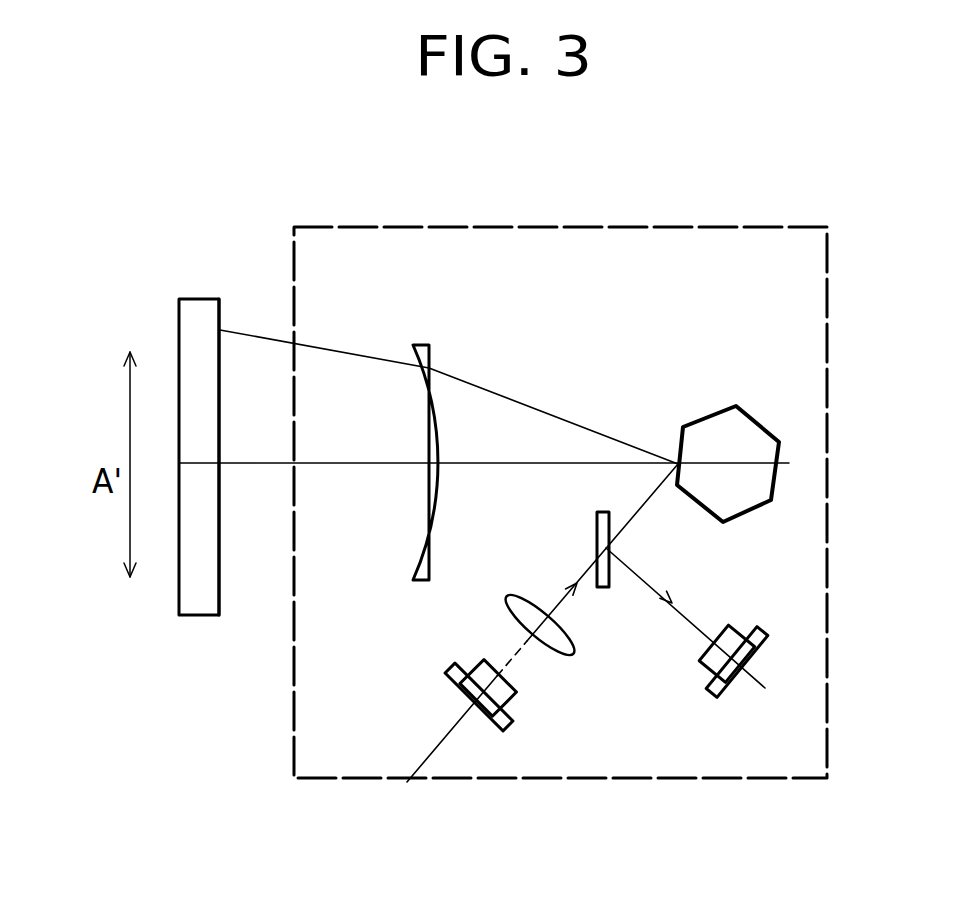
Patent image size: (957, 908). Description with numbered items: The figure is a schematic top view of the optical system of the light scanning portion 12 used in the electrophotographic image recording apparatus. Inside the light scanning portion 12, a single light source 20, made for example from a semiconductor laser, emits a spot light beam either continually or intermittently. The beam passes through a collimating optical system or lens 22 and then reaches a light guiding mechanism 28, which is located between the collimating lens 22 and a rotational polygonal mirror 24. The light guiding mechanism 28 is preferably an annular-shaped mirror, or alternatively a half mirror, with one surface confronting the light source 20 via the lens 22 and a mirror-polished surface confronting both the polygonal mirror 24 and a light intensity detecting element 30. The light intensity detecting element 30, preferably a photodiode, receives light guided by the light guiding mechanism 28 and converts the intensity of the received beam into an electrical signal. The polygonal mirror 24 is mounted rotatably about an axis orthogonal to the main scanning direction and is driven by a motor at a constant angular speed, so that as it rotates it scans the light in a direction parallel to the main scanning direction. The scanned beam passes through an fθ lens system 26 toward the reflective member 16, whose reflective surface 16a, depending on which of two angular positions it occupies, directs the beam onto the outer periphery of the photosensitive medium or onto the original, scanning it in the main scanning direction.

The light scanning portion 12 is at (612, 224).
The reflective member 16 is at (147, 610).
The reflective member 16a is at (197, 598).
The light source 20 is at (462, 682).
The collimating optical system 22 is at (560, 643).
The rotational polygonal mirror 24 is at (742, 430).
The fθ lens system 26 is at (422, 413).
The light guiding mechanism 28 is at (595, 540).
The light intensity detecting element 30 is at (728, 673).